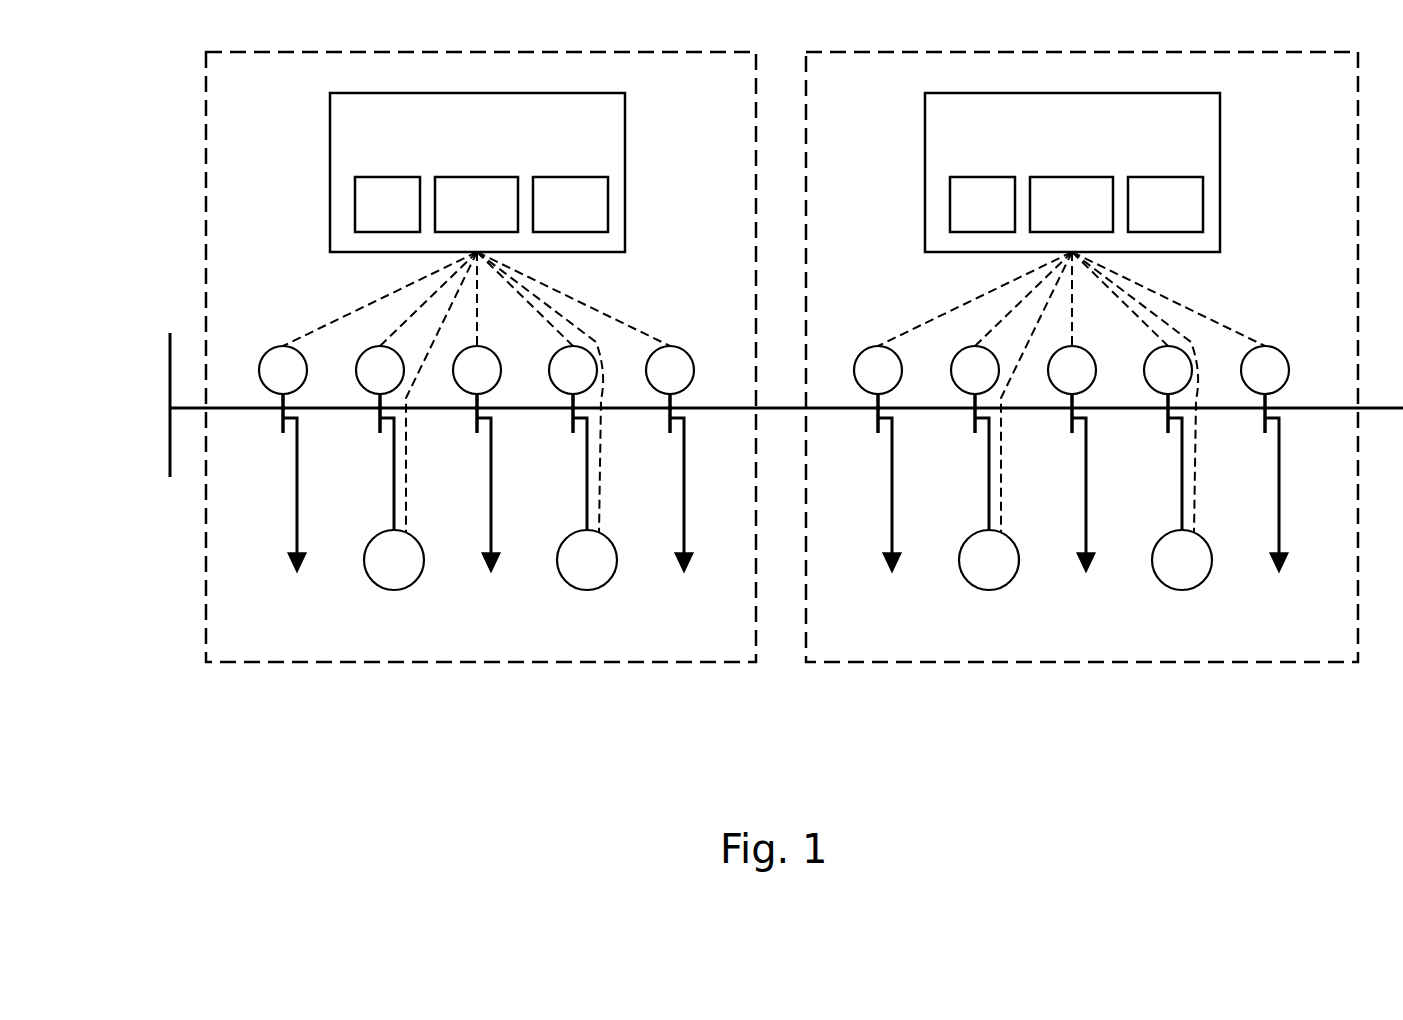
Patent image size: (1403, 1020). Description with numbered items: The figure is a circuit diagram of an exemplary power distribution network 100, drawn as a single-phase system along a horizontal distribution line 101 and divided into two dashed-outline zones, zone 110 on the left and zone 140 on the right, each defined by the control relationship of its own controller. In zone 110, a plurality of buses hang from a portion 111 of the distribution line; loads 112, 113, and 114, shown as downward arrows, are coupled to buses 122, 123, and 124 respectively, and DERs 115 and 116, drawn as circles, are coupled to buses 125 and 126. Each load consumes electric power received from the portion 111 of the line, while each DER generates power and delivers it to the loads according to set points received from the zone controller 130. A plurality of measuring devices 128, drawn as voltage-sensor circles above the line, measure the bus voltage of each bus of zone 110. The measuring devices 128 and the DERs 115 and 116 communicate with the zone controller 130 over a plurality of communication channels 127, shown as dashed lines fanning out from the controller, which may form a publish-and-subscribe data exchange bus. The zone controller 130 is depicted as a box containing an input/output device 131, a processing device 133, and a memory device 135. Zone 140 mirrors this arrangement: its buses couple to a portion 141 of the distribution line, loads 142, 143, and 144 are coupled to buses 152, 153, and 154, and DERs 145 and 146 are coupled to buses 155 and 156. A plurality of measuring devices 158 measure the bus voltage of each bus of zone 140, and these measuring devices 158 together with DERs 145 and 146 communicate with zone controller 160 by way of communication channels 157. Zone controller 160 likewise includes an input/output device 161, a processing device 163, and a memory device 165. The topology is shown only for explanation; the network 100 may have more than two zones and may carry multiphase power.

The power distribution network 100 is at (752, 406).
The bus 101 is at (170, 388).
The zone 110 is at (482, 662).
The portion of a distribution line 111 is at (248, 405).
The load 112 is at (299, 503).
The load 113 is at (493, 503).
The load 114 is at (686, 503).
The DER 115 is at (416, 533).
The DER 116 is at (609, 533).
The bus 122 is at (281, 424).
The bus 123 is at (475, 424).
The bus 124 is at (668, 424).
The bus 125 is at (378, 424).
The bus 126 is at (571, 424).
The communication channels 127 is at (603, 289).
The measuring devices 128 is at (700, 344).
The zone controller 130 is at (513, 172).
The input/output device 131 is at (372, 177).
The processing device 133 is at (478, 177).
The memory device 135 is at (585, 177).
The zone 140 is at (1077, 662).
The portion of a distribution line 141 is at (843, 405).
The load 142 is at (894, 503).
The load 143 is at (1088, 503).
The load 144 is at (1281, 503).
The DER 145 is at (1011, 533).
The DER 146 is at (1204, 533).
The bus 152 is at (876, 424).
The bus 153 is at (1070, 424).
The bus 154 is at (1263, 424).
The bus 155 is at (973, 424).
The bus 156 is at (1166, 424).
The communication channels 157 is at (1198, 289).
The measuring devices 158 is at (1295, 344).
The zone controller 160 is at (1108, 172).
The input/output device 161 is at (967, 177).
The processing device 163 is at (1073, 177).
The memory device 165 is at (1180, 177).